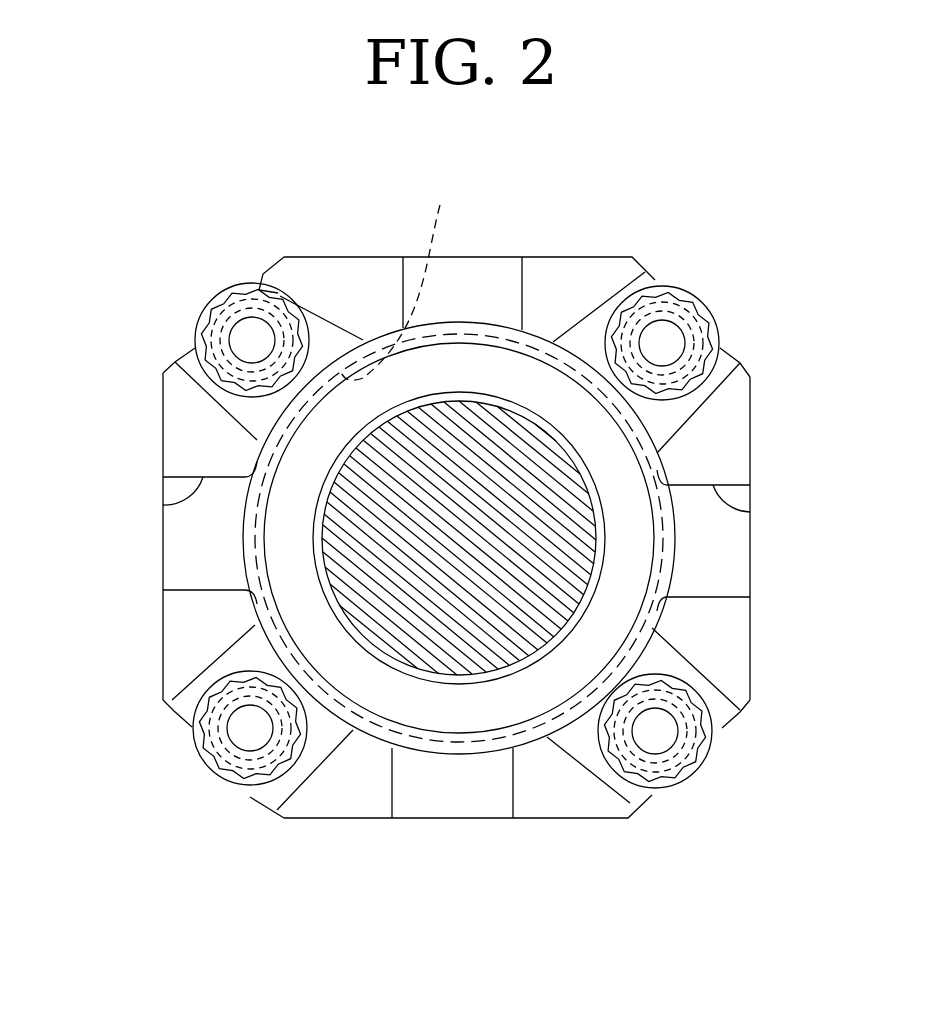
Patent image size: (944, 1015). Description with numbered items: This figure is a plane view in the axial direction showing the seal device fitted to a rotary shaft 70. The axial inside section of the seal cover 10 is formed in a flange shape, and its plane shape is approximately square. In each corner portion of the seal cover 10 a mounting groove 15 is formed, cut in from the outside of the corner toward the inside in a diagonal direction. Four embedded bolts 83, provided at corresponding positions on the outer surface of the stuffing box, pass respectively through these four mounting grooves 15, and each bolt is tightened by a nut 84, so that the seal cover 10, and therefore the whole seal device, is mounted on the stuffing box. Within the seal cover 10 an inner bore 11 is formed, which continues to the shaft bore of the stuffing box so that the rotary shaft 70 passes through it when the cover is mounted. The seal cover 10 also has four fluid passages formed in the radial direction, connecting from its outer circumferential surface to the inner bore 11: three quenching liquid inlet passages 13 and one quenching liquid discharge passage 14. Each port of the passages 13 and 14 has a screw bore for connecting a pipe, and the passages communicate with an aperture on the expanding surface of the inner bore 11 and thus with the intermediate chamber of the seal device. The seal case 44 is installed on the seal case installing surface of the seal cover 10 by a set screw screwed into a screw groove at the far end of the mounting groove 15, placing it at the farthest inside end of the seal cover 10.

The seal cover 10 is at (755, 428).
The inner bore 11 is at (668, 565).
The quenching liquid inlet passage 13 is at (522, 293).
The quenching liquid discharge passage 14 is at (513, 790).
The mounting groove 15 is at (252, 334).
The seal case 44 is at (403, 274).
The rotary shaft 70 is at (440, 630).
The embedded bolt 83 is at (662, 340).
The nut 84 is at (684, 302).